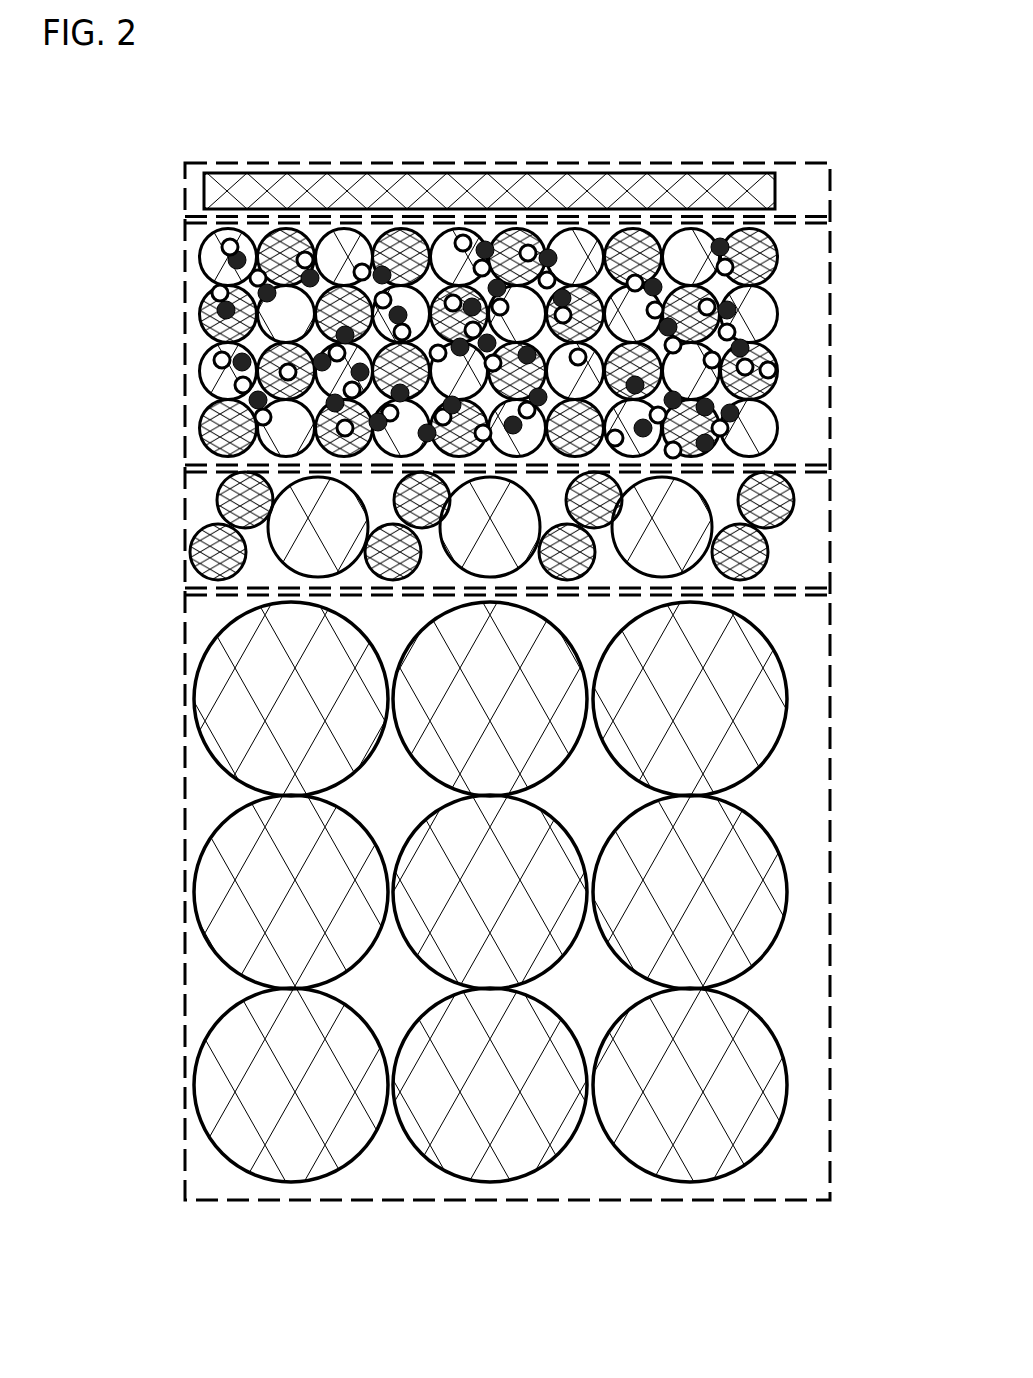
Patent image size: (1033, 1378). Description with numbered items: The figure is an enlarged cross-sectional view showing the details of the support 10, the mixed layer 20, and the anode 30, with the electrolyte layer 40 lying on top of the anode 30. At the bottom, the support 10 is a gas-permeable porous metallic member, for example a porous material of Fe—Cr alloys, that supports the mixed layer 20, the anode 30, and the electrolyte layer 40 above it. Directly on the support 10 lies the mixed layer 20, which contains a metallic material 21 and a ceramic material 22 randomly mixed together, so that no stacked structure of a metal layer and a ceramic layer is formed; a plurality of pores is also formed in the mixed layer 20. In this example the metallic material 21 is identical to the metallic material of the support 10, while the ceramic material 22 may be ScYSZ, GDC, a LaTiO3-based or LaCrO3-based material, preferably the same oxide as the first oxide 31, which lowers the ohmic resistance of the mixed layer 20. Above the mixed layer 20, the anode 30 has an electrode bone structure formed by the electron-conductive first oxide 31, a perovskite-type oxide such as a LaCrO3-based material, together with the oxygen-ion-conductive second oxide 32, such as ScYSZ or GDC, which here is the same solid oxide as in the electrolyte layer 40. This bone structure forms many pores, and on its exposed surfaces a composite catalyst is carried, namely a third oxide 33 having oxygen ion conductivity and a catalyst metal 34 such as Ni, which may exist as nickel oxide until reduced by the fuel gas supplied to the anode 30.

The support 10 is at (830, 718).
The mixed layer 20 is at (498, 528).
The metallic material 21 is at (295, 548).
The ceramic material 22 is at (795, 497).
The anode 30 is at (510, 344).
The first oxide 31 is at (760, 254).
The second oxide 32 is at (765, 319).
The third oxide 33 is at (222, 251).
The catalyst metal 34 is at (216, 312).
The electrolyte layer 40 is at (708, 185).